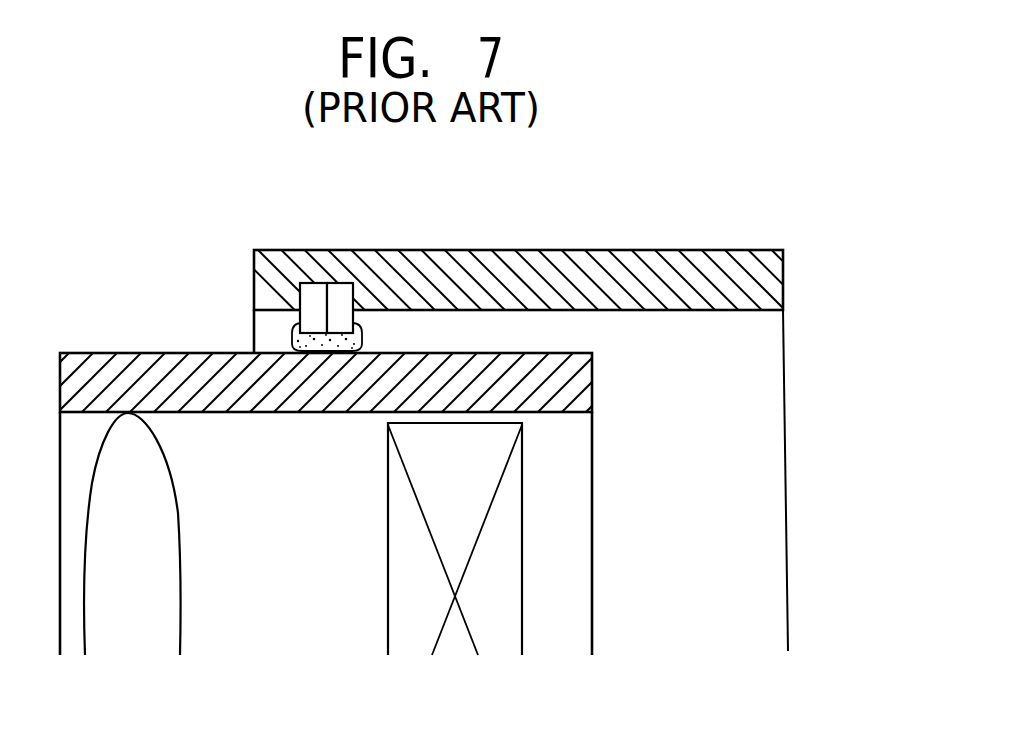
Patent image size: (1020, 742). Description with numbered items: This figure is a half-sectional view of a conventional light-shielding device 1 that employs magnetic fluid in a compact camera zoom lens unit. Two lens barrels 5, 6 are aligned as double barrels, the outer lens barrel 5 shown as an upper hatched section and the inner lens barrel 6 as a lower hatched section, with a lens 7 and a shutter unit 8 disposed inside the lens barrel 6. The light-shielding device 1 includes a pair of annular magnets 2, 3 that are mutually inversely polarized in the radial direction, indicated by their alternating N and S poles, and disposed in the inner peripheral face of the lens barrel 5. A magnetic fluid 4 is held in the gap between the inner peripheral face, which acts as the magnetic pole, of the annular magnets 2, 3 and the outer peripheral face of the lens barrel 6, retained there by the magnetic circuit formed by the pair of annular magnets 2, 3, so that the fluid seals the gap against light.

The light-shielding device 1 is at (328, 248).
The annular magnet 2 is at (303, 283).
The annular magnet 3 is at (340, 284).
The magnetic fluid 4 is at (362, 331).
The lens barrel 5 is at (482, 268).
The lens barrel 6 is at (178, 353).
The lens 7 is at (160, 517).
The shutter unit 8 is at (400, 570).